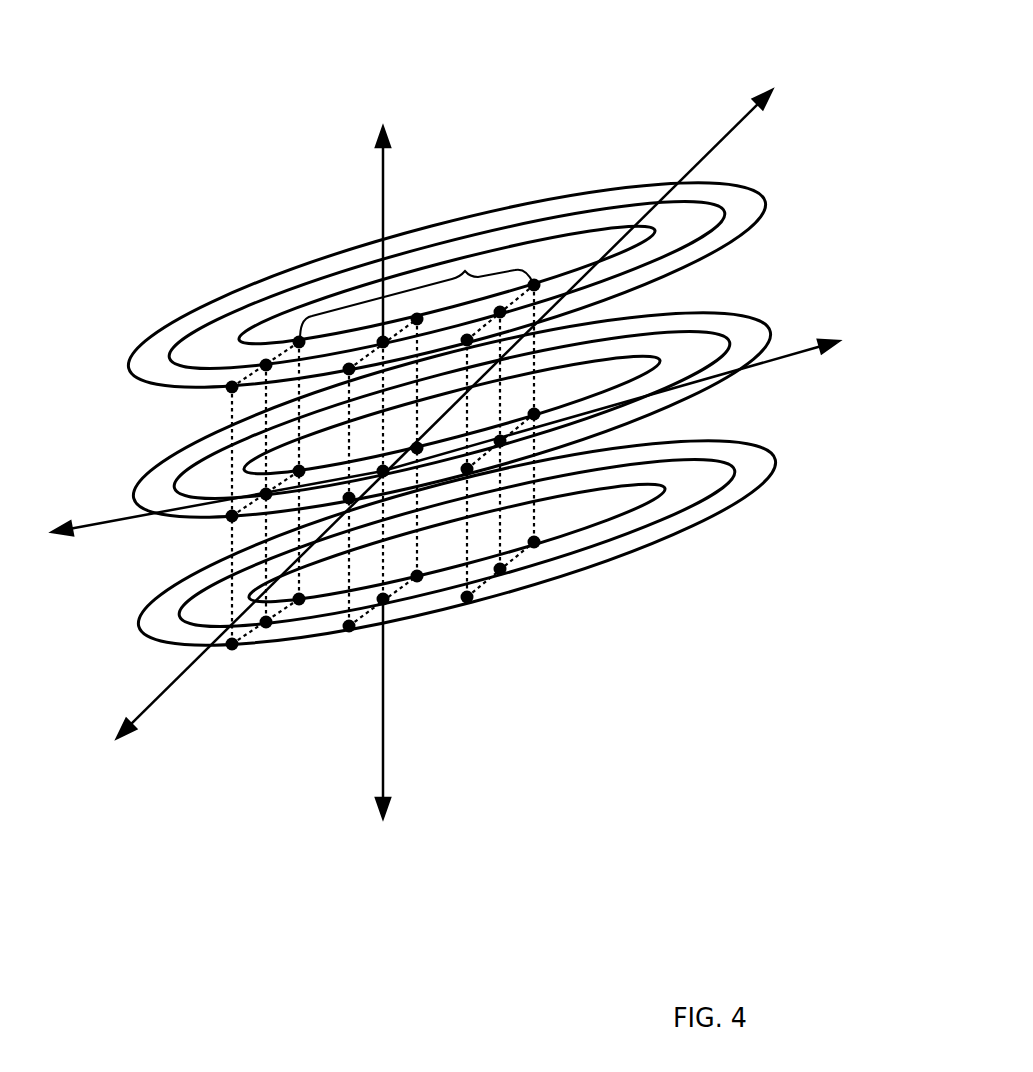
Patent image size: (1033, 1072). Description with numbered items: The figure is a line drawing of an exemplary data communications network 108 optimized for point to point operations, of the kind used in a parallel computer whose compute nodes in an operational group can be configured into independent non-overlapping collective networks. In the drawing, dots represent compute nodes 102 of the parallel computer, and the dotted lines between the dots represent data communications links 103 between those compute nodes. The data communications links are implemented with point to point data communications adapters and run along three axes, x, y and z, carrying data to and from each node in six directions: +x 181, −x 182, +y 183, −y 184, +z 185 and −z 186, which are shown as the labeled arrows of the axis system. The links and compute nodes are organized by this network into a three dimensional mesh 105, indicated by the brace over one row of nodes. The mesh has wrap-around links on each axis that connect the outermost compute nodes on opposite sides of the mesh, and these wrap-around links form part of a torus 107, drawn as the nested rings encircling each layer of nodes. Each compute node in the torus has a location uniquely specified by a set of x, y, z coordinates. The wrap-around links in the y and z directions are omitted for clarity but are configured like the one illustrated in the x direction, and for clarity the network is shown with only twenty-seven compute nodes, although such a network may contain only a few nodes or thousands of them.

The compute nodes 102 is at (533, 542).
The data communications links 103 is at (233, 546).
The three dimensional mesh 105 is at (470, 262).
The torus 107 is at (208, 286).
The data communications network 108 is at (445, 566).
The +x direction 181 is at (873, 371).
The −x direction 182 is at (47, 571).
The +y direction 183 is at (813, 121).
The −y direction 184 is at (113, 790).
The +z direction 185 is at (400, 121).
The −z direction 186 is at (402, 881).